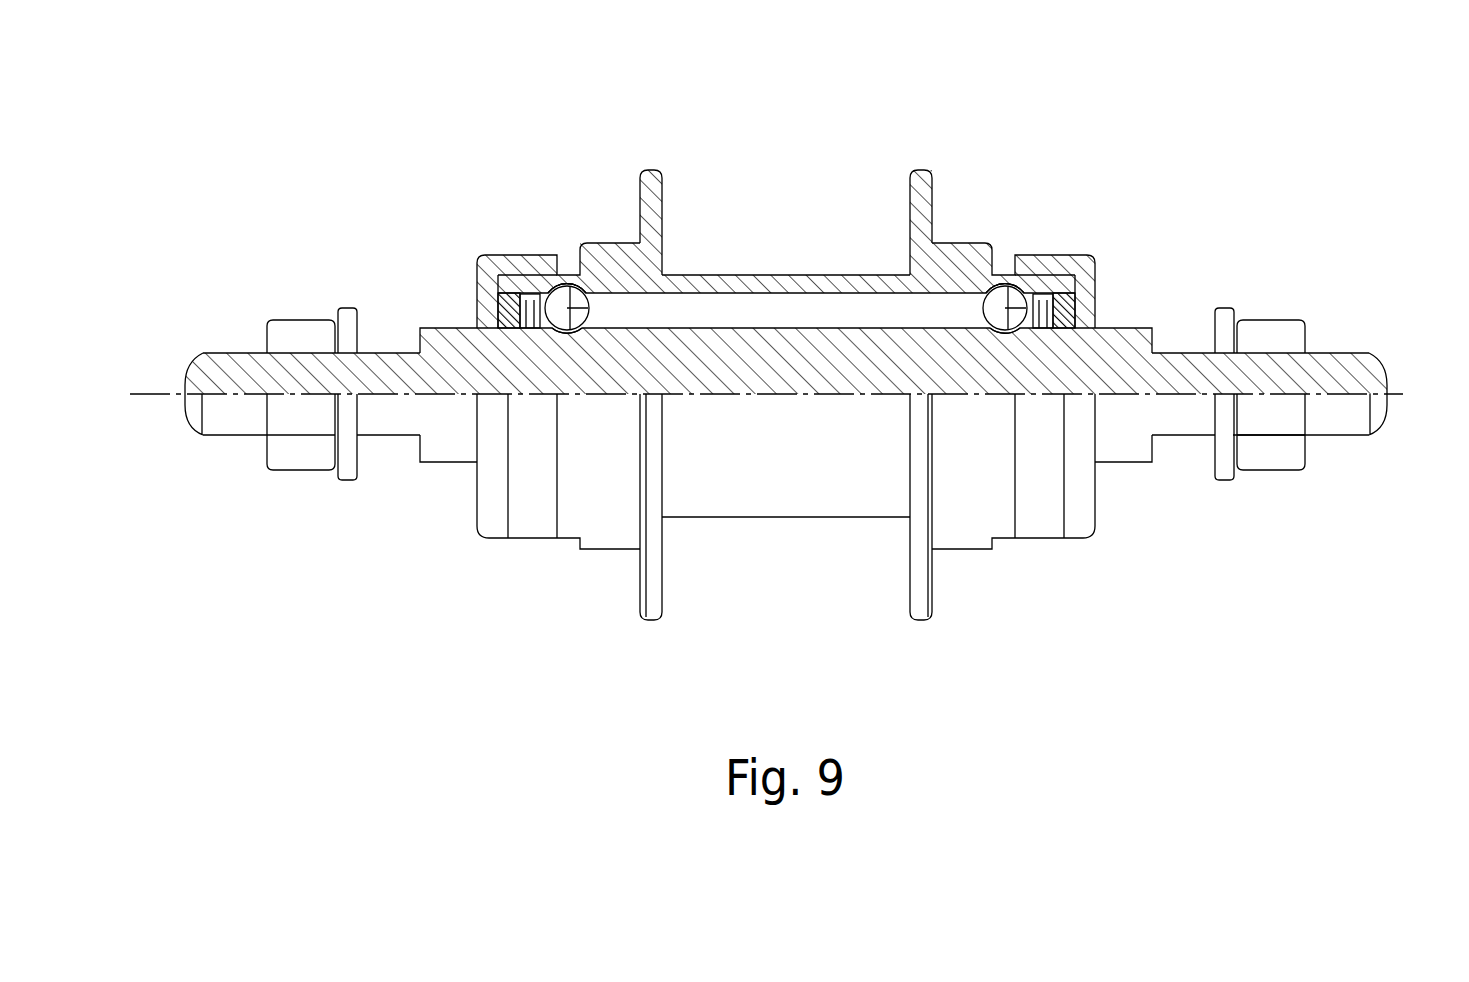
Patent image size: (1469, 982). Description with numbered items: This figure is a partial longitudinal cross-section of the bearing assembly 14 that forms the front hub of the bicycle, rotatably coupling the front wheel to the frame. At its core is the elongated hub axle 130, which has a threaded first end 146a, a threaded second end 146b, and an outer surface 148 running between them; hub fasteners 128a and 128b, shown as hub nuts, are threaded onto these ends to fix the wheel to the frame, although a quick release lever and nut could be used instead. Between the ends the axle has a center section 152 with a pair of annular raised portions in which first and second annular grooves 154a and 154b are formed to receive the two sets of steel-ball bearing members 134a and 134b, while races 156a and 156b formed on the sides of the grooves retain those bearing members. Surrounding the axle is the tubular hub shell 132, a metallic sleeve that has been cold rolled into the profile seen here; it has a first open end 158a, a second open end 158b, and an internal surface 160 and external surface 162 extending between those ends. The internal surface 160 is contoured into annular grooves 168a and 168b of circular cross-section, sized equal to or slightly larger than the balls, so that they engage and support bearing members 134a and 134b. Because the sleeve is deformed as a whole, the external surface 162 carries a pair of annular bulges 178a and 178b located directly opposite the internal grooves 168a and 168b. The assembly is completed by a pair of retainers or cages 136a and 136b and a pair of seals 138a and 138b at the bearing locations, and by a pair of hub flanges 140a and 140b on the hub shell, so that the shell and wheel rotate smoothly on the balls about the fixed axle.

The bearing assembly 14 is at (516, 220).
The hub fastener 128a is at (310, 470).
The hub fastener 128b is at (1272, 470).
The hub axle 130 is at (1133, 340).
The hub shell 132 is at (763, 275).
The bearing members 134a is at (567, 286).
The bearing members 134b is at (1010, 286).
The retainer or cage 136a is at (545, 260).
The retainer or cage 136b is at (1080, 296).
The seal 138a is at (500, 306).
The seal 138b is at (1095, 305).
The hub flange 140a is at (662, 183).
The hub flange 140b is at (934, 188).
The first end 146a is at (242, 352).
The second end 146b is at (1337, 353).
The outer surface 148 is at (867, 318).
The center section 152 is at (725, 325).
The first annular groove 154a is at (586, 297).
The second annular groove 154b is at (988, 298).
The race 156a is at (583, 328).
The race 156b is at (1022, 328).
The first open end 158a is at (477, 267).
The second open end 158b is at (1090, 257).
The internal surface 160 is at (831, 293).
The external surface 162 is at (755, 517).
The annular groove 168a is at (671, 292).
The annular groove 168b is at (1007, 287).
The annular bulge 178a is at (598, 242).
The annular bulge 178b is at (1035, 275).